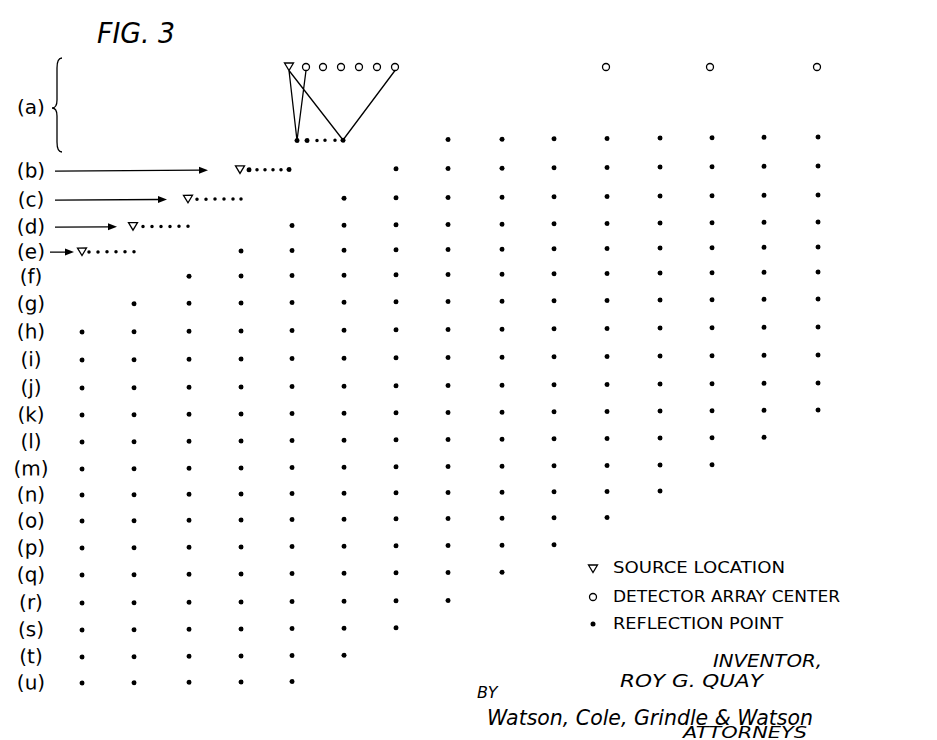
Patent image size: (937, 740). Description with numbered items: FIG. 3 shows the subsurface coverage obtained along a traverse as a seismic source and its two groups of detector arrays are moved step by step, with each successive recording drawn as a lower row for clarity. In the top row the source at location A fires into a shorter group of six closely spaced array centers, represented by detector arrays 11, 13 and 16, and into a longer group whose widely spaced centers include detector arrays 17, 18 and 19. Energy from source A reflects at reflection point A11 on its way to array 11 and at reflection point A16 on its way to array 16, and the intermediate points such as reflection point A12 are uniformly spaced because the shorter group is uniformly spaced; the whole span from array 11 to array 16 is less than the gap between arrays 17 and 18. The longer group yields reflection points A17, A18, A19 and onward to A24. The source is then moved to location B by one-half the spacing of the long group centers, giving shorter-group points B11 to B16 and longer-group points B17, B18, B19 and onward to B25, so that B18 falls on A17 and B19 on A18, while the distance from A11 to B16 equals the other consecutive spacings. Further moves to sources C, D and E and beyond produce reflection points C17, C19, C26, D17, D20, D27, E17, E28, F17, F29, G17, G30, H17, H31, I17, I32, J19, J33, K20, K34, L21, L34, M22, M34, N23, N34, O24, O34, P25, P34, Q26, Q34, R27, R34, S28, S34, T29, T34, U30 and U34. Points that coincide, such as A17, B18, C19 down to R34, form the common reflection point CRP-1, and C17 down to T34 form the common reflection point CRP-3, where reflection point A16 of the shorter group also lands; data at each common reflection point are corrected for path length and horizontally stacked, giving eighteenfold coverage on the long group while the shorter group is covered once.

The detector array 11 is at (306, 59).
The detector array 13 is at (341, 59).
The detector array 16 is at (395, 59).
The detector array 17 is at (606, 59).
The detector array 18 is at (710, 59).
The detector array 19 is at (817, 59).
The source A is at (288, 59).
The source B is at (238, 161).
The source C is at (187, 190).
The source D is at (132, 218).
The source E is at (81, 243).
The reflection point A11 is at (292, 141).
The reflection point A12 is at (309, 141).
The reflection point A16 is at (348, 141).
The reflection point A17 is at (462, 131).
The reflection point A18 is at (516, 131).
The reflection point A19 is at (568, 131).
The reflection point A24 is at (832, 129).
The reflection point B11 is at (248, 168).
The reflection point B16 is at (293, 171).
The reflection point B17 is at (410, 161).
The reflection point B18 is at (462, 160).
The reflection point B19 is at (516, 160).
The reflection point B25 is at (832, 158).
The reflection point C17 is at (358, 190).
The reflection point C19 is at (462, 189).
The reflection point C26 is at (832, 187).
The reflection point D17 is at (306, 217).
The reflection point D20 is at (462, 216).
The reflection point D27 is at (832, 214).
The reflection point E17 is at (254, 243).
The reflection point E28 is at (831, 239).
The reflection point F17 is at (202, 268).
The reflection point F29 is at (831, 264).
The reflection point G17 is at (148, 295).
The reflection point G30 is at (832, 291).
The reflection point H17 is at (96, 324).
The reflection point H31 is at (832, 319).
The reflection point I17 is at (93, 352).
The reflection point I32 is at (829, 347).
The reflection point J19 is at (93, 380).
The reflection point J33 is at (829, 375).
The reflection point K20 is at (96, 407).
The reflection point K34 is at (832, 402).
The reflection point L21 is at (95, 434).
The reflection point L34 is at (777, 429).
The reflection point M22 is at (97, 461).
The reflection point M34 is at (727, 457).
The reflection point N23 is at (96, 487).
The reflection point N34 is at (674, 483).
The reflection point O24 is at (96, 513).
The reflection point O34 is at (621, 509).
The reflection point P25 is at (95, 540).
The reflection point P34 is at (567, 537).
The reflection point Q26 is at (96, 567).
The reflection point Q34 is at (516, 564).
The reflection point R27 is at (96, 595).
The reflection point R34 is at (462, 592).
The reflection point S28 is at (95, 622).
The reflection point S34 is at (409, 620).
The reflection point T29 is at (95, 649).
The reflection point T34 is at (357, 647).
The reflection point U30 is at (96, 675).
The reflection point U34 is at (306, 673).
The common reflection point CRP-1 is at (451, 614).
The common reflection point CRP-3 is at (346, 676).